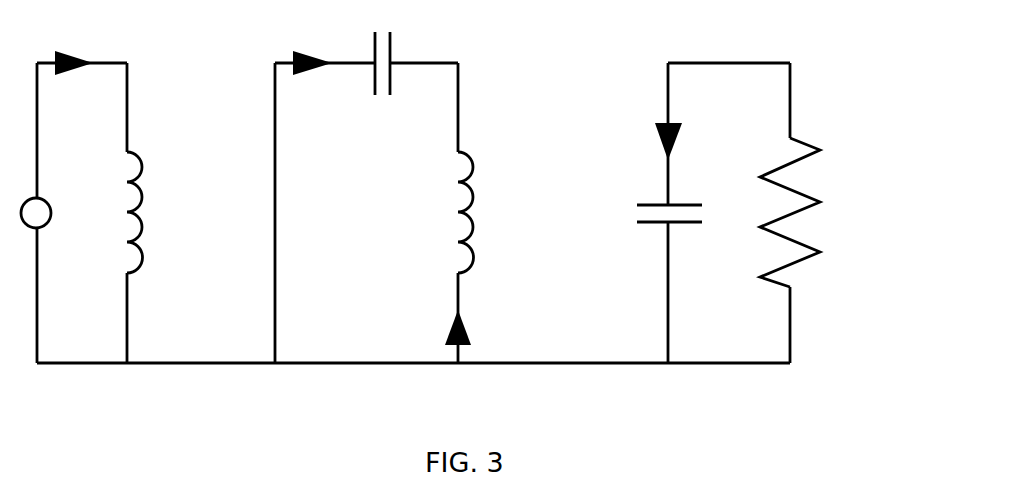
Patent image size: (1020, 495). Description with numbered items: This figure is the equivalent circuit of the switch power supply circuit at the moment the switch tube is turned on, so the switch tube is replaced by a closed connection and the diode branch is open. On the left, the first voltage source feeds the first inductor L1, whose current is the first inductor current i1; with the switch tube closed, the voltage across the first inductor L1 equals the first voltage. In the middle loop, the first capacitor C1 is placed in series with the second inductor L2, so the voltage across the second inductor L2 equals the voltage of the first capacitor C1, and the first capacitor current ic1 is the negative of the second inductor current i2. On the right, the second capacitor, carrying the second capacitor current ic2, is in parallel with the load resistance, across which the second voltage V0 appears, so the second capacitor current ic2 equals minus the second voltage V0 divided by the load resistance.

The first inductor current i1 is at (80, 88).
The first inductor L1 is at (167, 212).
The first capacitor current ic1 is at (327, 38).
The first capacitor C1 is at (528, 136).
The second inductor L2 is at (436, 212).
The second inductor current i2 is at (480, 321).
The second capacitor current ic2 is at (633, 141).
The second voltage V0 is at (830, 212).